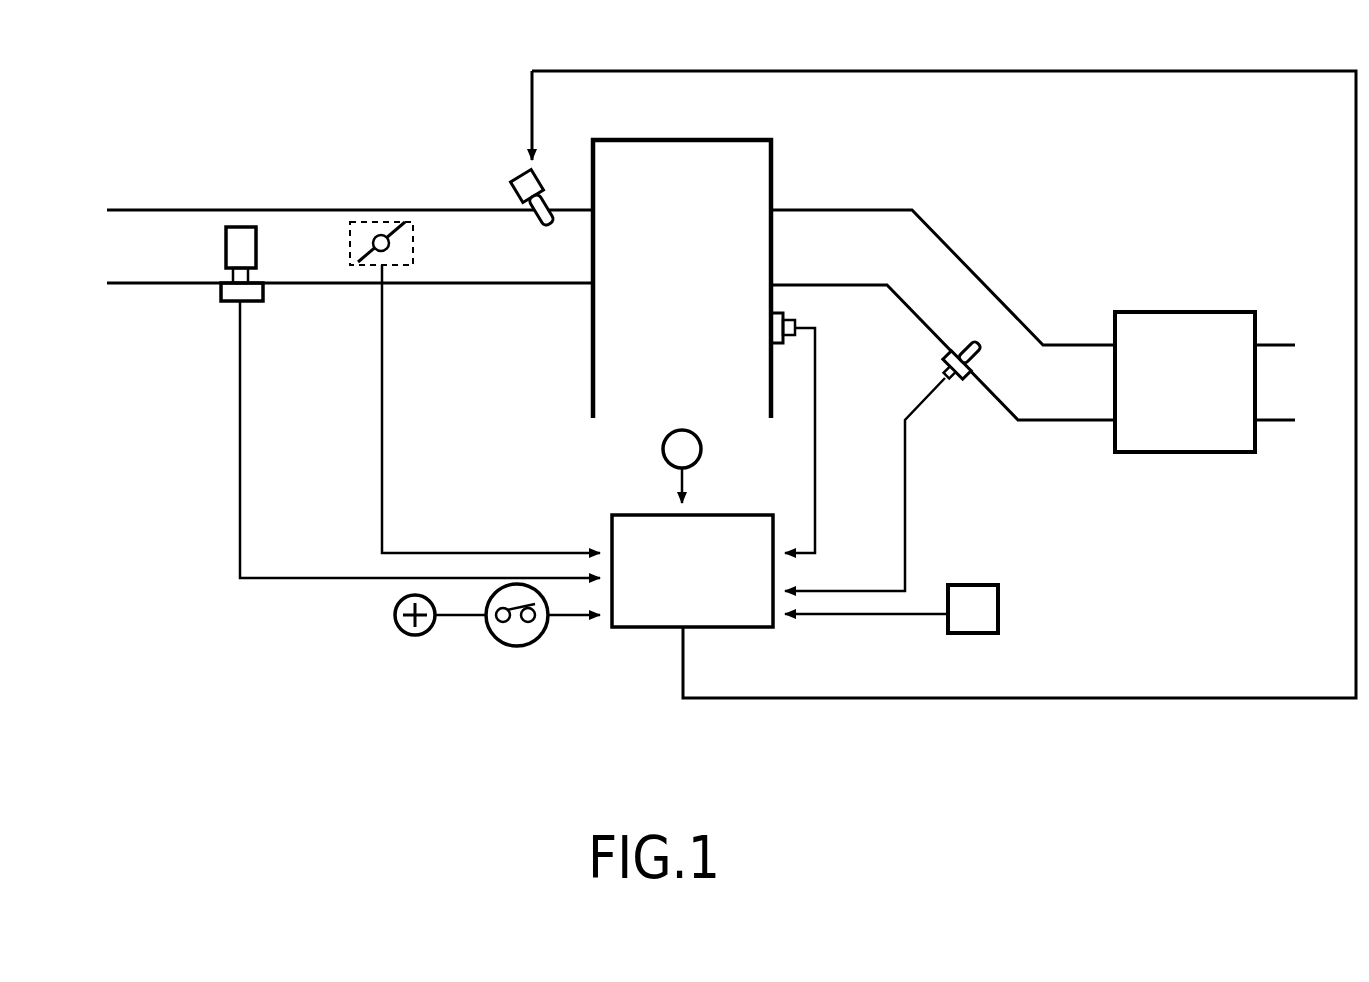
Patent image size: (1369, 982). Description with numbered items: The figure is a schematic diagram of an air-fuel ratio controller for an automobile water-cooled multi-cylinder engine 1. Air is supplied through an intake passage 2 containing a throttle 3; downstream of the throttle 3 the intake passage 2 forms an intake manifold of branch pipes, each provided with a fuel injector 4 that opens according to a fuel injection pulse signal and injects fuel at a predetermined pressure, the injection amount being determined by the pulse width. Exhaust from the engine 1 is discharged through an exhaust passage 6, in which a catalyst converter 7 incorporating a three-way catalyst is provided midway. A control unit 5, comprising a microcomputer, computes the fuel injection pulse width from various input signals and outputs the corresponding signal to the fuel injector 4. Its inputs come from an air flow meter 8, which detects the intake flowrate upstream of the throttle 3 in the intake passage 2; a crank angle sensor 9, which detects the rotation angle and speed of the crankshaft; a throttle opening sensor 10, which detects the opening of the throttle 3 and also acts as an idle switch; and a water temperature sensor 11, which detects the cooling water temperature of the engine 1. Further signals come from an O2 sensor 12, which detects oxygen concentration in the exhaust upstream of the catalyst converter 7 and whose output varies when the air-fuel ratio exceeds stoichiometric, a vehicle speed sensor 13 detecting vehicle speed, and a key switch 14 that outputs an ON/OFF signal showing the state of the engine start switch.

The engine 1 is at (772, 153).
The intake passage 2 is at (435, 215).
The throttle 3 is at (388, 223).
The fuel injector 4 is at (517, 178).
The control unit 5 is at (743, 515).
The exhaust passage 6 is at (972, 270).
The catalyst converter 7 is at (1158, 312).
The air flow meter 8 is at (226, 243).
The crank angle sensor 9 is at (683, 430).
The throttle opening sensor 10 is at (350, 242).
The water temperature sensor 11 is at (796, 324).
The O2 sensor 12 is at (965, 382).
The vehicle speed sensor 13 is at (1000, 585).
The key switch 14 is at (527, 645).